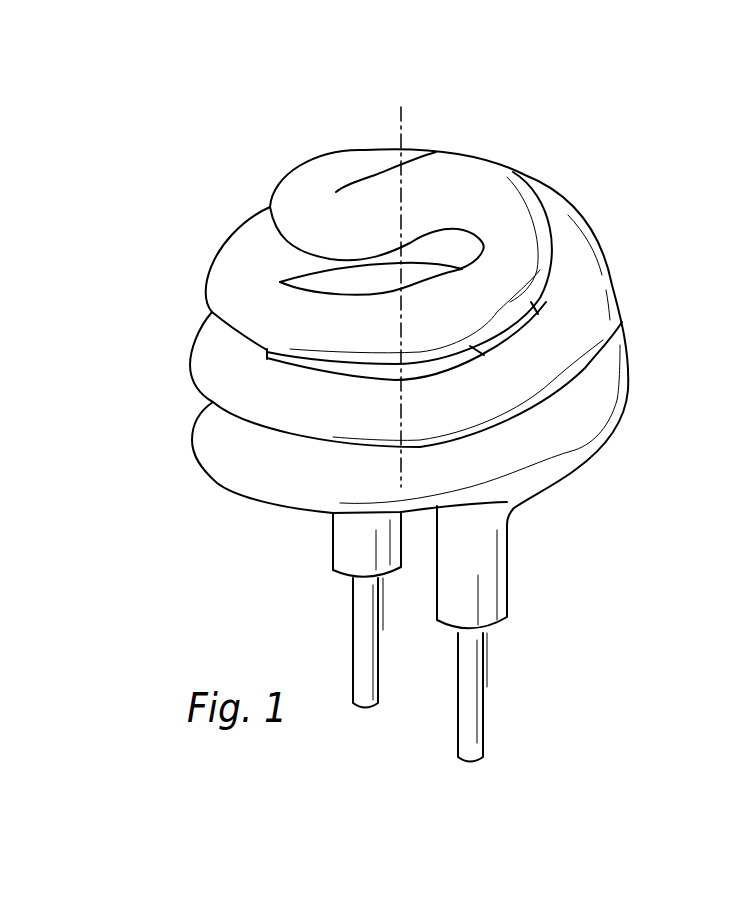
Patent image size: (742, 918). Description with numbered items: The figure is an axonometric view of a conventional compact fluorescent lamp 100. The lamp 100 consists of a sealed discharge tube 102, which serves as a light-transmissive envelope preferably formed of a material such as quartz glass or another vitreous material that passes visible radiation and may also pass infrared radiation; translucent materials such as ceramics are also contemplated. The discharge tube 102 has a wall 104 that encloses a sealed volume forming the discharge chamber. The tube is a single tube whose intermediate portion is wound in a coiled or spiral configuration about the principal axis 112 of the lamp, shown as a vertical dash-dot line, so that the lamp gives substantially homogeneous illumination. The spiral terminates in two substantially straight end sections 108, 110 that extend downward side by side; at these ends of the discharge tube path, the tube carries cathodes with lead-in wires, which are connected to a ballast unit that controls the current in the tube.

The compact fluorescent lamp 100 is at (218, 161).
The discharge tube 102 is at (603, 239).
The wall 104 is at (438, 166).
The end section 108 is at (492, 592).
The end section 110 is at (341, 550).
The principal axis 112 is at (400, 121).